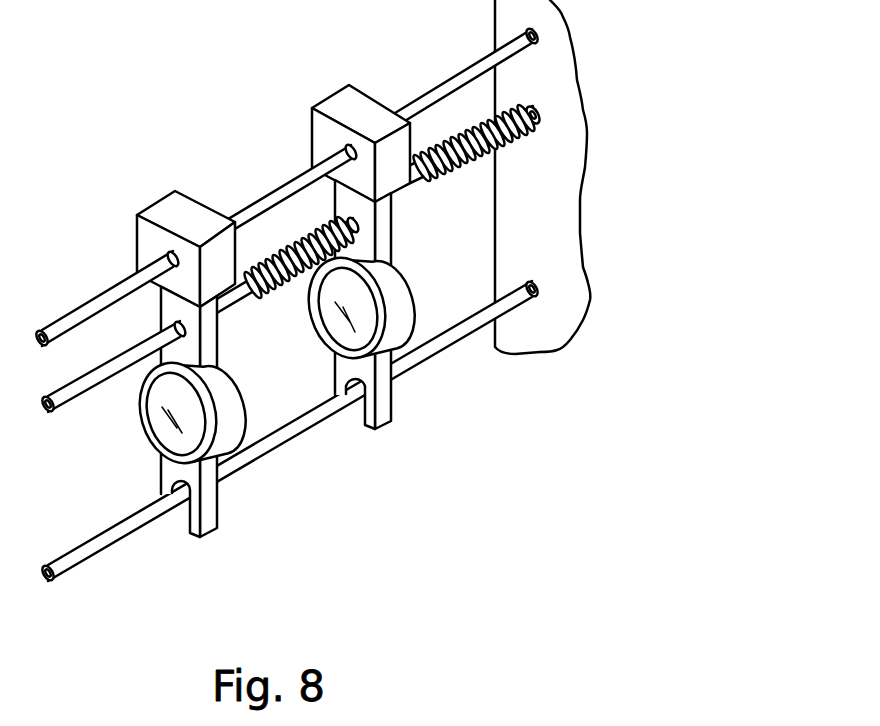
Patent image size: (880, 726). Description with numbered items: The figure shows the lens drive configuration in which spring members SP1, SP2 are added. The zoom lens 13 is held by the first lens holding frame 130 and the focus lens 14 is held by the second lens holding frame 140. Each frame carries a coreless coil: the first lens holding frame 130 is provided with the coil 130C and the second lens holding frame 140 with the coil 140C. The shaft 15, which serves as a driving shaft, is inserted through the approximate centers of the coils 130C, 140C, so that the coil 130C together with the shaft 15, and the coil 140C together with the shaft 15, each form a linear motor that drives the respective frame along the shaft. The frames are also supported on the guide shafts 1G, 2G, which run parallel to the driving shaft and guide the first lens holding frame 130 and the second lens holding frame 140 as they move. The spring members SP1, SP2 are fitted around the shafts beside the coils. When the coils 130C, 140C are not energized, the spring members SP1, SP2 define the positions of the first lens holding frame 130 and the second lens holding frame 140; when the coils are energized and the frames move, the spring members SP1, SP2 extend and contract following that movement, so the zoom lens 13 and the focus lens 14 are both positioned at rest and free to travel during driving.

The zoom lens 13 is at (332, 293).
The focus lens 14 is at (153, 402).
The shaft 15 is at (88, 304).
The first lens holding frame 130 is at (403, 302).
The second lens holding frame 140 is at (232, 420).
The coreless coil 130C is at (165, 210).
The coreless coil 140C is at (340, 105).
The spring member SP1 is at (293, 242).
The spring member SP2 is at (464, 134).
The guide shaft 1G is at (68, 411).
The guide shaft 2G is at (77, 560).